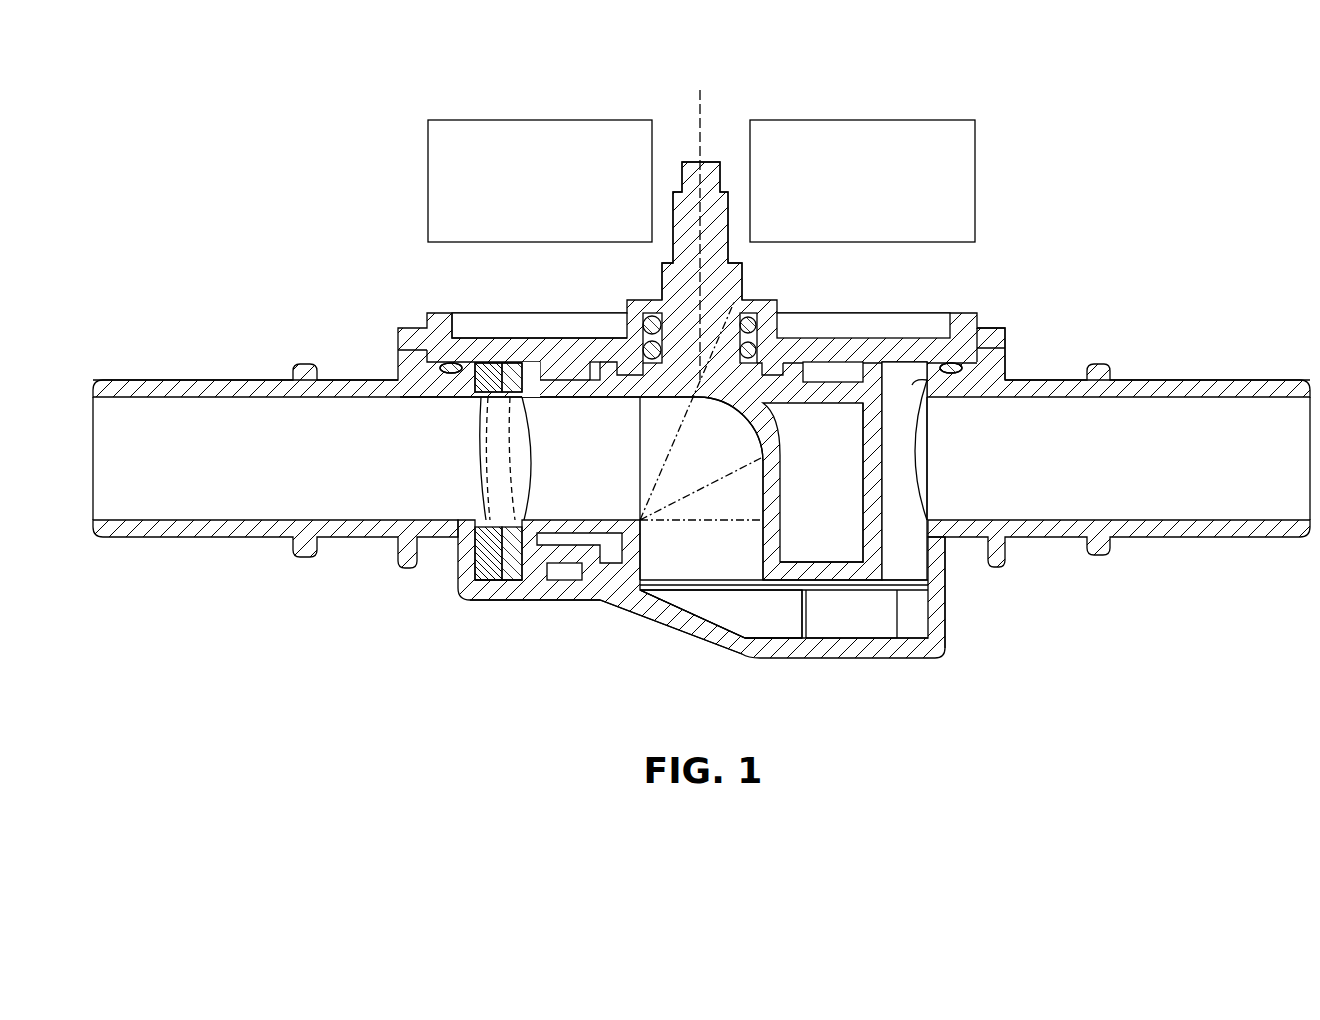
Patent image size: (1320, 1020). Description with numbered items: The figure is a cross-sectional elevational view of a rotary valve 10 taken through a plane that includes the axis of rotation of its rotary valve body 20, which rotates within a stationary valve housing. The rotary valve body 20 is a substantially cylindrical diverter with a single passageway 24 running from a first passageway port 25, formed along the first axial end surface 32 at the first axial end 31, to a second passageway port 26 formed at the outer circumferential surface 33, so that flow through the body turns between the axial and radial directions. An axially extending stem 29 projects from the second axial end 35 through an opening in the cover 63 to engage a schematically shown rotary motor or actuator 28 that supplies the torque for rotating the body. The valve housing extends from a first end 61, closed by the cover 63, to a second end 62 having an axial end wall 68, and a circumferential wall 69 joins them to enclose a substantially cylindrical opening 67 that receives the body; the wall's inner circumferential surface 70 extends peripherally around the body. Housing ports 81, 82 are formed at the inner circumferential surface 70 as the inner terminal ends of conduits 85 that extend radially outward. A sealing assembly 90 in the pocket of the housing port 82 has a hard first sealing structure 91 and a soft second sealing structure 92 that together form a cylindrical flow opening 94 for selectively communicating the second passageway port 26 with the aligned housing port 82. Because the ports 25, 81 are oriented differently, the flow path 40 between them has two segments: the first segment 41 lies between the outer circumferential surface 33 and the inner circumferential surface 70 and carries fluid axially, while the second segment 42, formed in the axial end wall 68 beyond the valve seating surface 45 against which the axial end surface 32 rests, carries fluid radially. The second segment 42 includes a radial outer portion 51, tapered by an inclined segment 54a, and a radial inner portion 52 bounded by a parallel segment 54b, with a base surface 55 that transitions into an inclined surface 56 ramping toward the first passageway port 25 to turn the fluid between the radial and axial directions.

The rotary valve 10 is at (1094, 197).
The rotary valve body 20 is at (597, 356).
The passageway 24 is at (605, 397).
The first passageway port 25 is at (668, 611).
The second passageway port 26 is at (490, 401).
The rotary motor or actuator 28 is at (528, 192).
The stem 29 is at (708, 161).
The first axial end 31 is at (608, 586).
The first axial end surface 32 is at (742, 646).
The outer circumferential surface 33 is at (883, 415).
The second axial end 35 is at (766, 372).
The flow path 40 is at (751, 520).
The first segment 41 is at (898, 528).
The second segment 42 is at (789, 596).
The valve seating surface 45 is at (630, 577).
The radial outer portion 51 is at (872, 619).
The radial inner portion 52 is at (751, 619).
The inclined segment 54a is at (886, 605).
The parallel segment 54b is at (774, 625).
The base surface 55 is at (833, 634).
The inclined surface 56 is at (718, 633).
The first end 61 is at (956, 313).
The second end 62 is at (946, 653).
The cover 63 is at (1000, 328).
The opening 67 is at (902, 481).
The axial end wall 68 is at (556, 599).
The circumferential wall 69 is at (937, 565).
The inner circumferential surface 70 is at (913, 386).
The first housing port 81 is at (932, 514).
The second housing port 82 is at (466, 545).
The conduit 85 is at (180, 382).
The sealing assembly 90 is at (458, 560).
The first sealing structure 91 is at (490, 583).
The second sealing structure 92 is at (487, 577).
The flow opening 94 is at (506, 523).